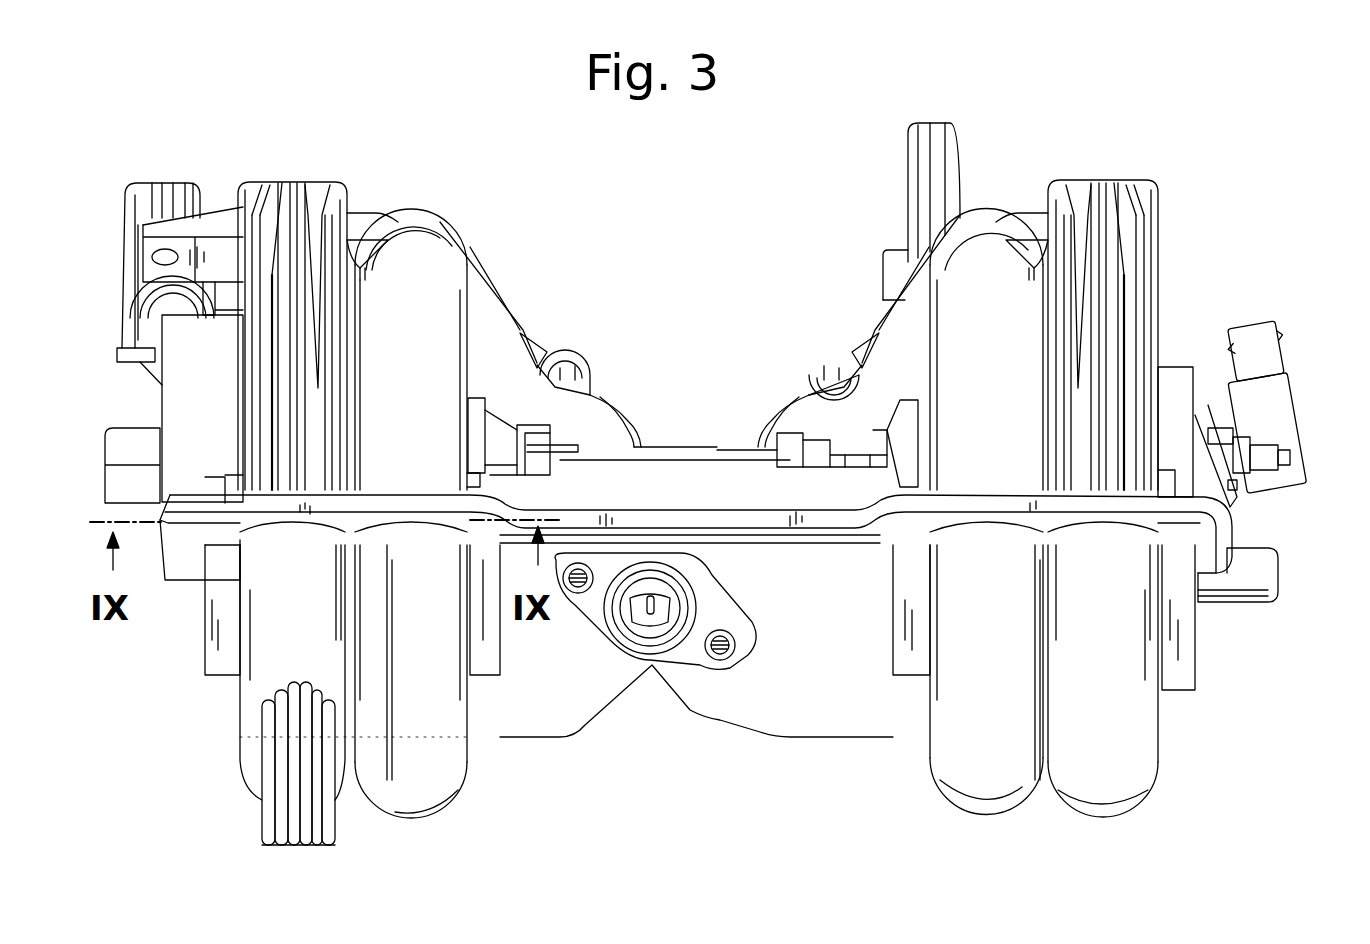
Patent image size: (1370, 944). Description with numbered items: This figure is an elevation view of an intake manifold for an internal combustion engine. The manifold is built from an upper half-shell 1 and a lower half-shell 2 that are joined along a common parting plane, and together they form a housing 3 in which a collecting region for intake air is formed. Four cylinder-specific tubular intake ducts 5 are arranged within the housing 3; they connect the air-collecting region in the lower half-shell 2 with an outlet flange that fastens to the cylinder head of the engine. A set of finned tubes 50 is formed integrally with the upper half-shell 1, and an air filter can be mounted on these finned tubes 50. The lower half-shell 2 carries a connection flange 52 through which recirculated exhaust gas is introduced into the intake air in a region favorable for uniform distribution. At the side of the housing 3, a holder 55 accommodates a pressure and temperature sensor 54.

The upper half-shell 1 is at (676, 465).
The lower half-shell 2 is at (835, 705).
The housing 3 is at (750, 742).
The tubular intake ducts 5 is at (444, 240).
The finned tubes 50 is at (310, 195).
The connection flange 52 is at (598, 628).
The pressure and temperature sensor 54 is at (1270, 402).
The holder 55 is at (1215, 433).